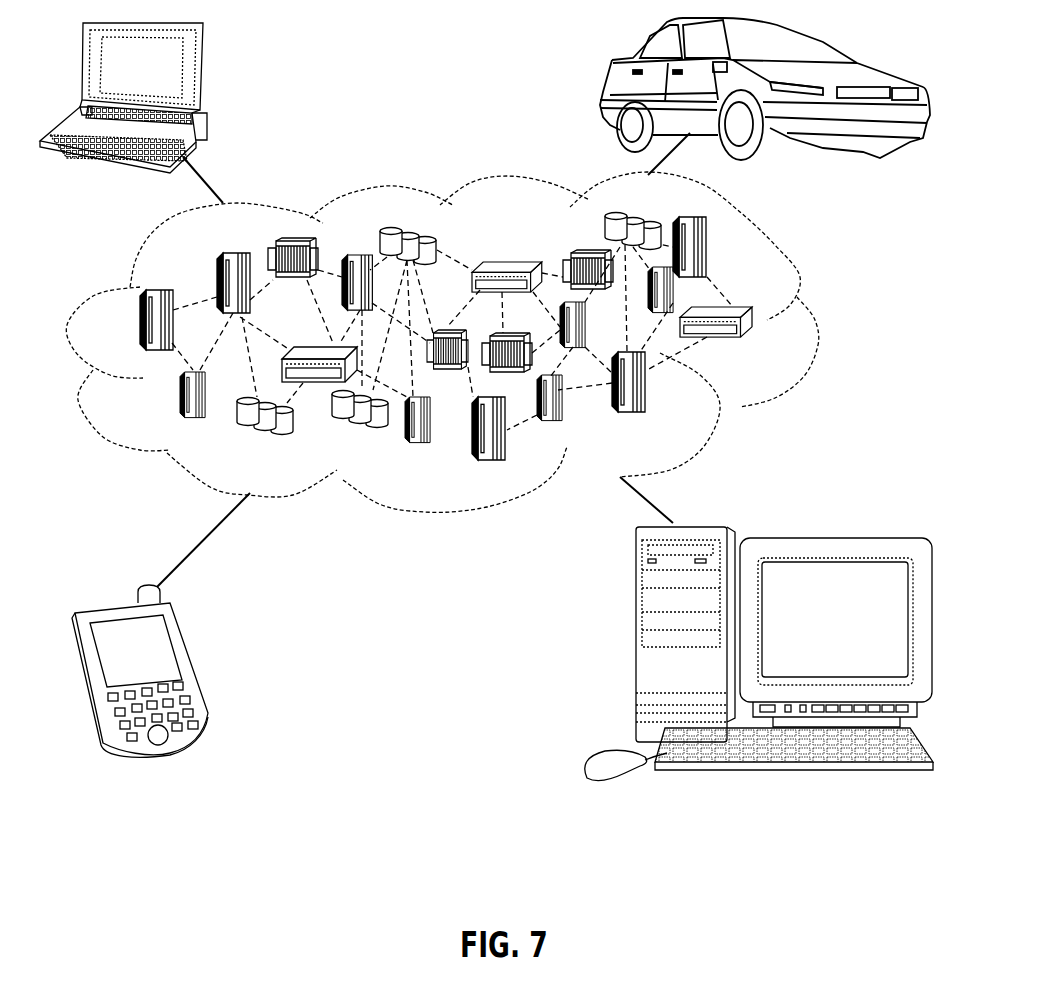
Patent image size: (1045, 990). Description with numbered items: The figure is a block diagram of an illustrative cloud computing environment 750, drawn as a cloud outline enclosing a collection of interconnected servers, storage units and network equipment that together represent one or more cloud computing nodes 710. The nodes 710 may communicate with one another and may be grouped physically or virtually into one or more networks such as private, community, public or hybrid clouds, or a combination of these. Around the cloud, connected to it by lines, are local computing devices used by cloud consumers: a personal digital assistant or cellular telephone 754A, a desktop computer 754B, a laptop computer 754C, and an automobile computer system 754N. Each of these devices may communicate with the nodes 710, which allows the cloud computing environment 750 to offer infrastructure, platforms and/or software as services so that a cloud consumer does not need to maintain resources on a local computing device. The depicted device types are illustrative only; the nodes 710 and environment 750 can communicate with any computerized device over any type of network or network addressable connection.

The cloud computing nodes 710 is at (883, 358).
The cloud computing environment 750 is at (857, 270).
The personal digital assistant (PDA) or cellular telephone 754A is at (253, 653).
The desktop computer 754B is at (637, 643).
The laptop computer 754C is at (260, 62).
The automobile computer system 754N is at (608, 78).